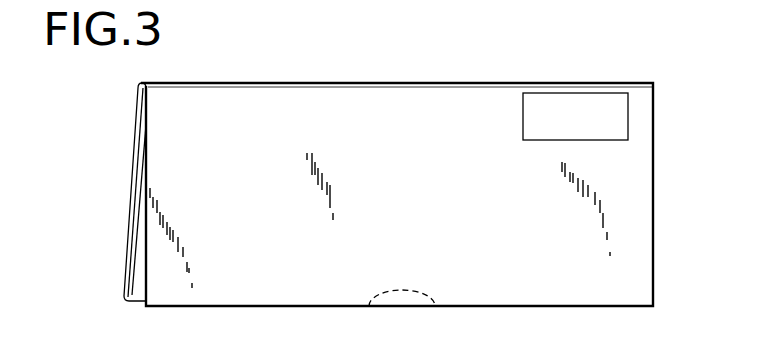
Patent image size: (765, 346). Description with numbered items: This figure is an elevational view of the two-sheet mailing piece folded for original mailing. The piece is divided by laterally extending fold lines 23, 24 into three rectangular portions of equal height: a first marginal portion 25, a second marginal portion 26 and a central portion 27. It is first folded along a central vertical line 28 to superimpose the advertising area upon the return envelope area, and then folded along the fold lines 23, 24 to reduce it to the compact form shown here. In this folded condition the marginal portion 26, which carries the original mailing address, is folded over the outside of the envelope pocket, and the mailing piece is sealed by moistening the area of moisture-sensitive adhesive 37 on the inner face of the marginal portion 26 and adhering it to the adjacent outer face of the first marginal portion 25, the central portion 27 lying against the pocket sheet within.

The fold line 23 is at (127, 303).
The fold line 24 is at (471, 57).
The first marginal portion 25 is at (140, 258).
The second marginal portion 26 is at (450, 132).
The central portion 27 is at (138, 176).
The central vertical line 28 is at (137, 153).
The area of moisture-sensitive adhesive 37 is at (403, 300).